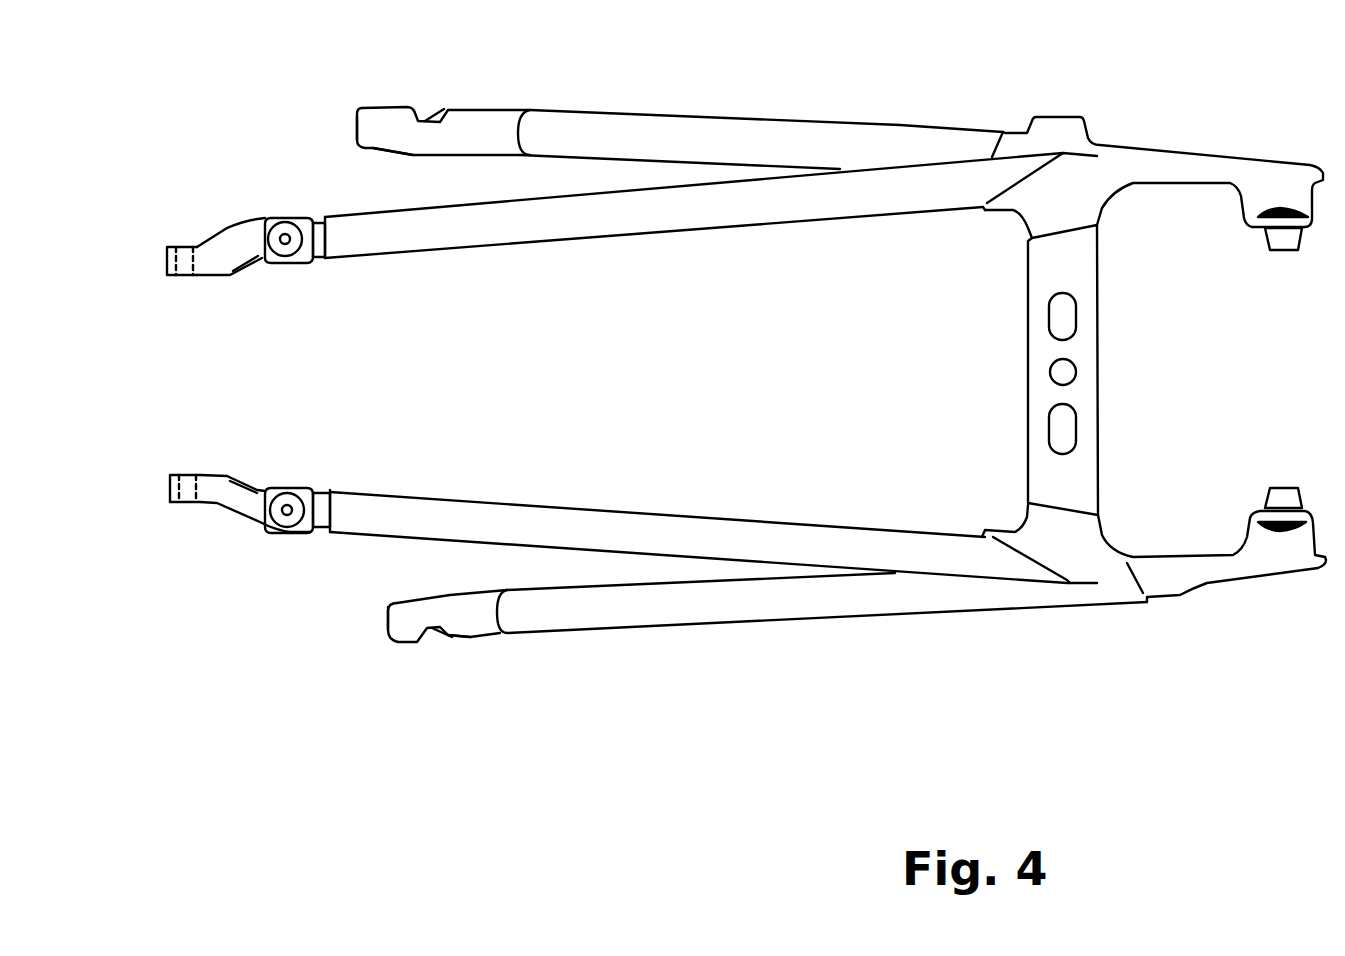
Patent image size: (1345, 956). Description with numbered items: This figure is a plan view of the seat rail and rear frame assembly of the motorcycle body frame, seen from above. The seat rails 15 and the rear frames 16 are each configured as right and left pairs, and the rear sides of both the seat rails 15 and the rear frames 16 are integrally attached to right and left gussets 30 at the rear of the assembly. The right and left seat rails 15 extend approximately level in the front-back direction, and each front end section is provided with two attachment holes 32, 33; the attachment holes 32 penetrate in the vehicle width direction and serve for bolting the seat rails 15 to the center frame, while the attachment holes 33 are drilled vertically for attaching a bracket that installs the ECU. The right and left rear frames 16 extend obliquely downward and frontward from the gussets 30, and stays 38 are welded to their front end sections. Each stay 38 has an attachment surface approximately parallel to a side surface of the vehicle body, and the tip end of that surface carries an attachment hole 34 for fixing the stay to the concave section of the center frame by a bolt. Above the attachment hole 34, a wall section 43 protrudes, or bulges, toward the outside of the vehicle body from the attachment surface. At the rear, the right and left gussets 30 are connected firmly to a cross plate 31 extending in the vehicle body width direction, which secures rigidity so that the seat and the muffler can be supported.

The seat rail 15 is at (737, 202).
The rear frame 16 is at (743, 125).
The gusset 30 is at (1177, 165).
The cross plate 31 is at (1087, 392).
The attachment hole 32 is at (182, 283).
The attachment hole 33 is at (286, 245).
The attachment hole 34 is at (367, 150).
The stay 38 is at (447, 137).
The wall section 43 is at (382, 110).